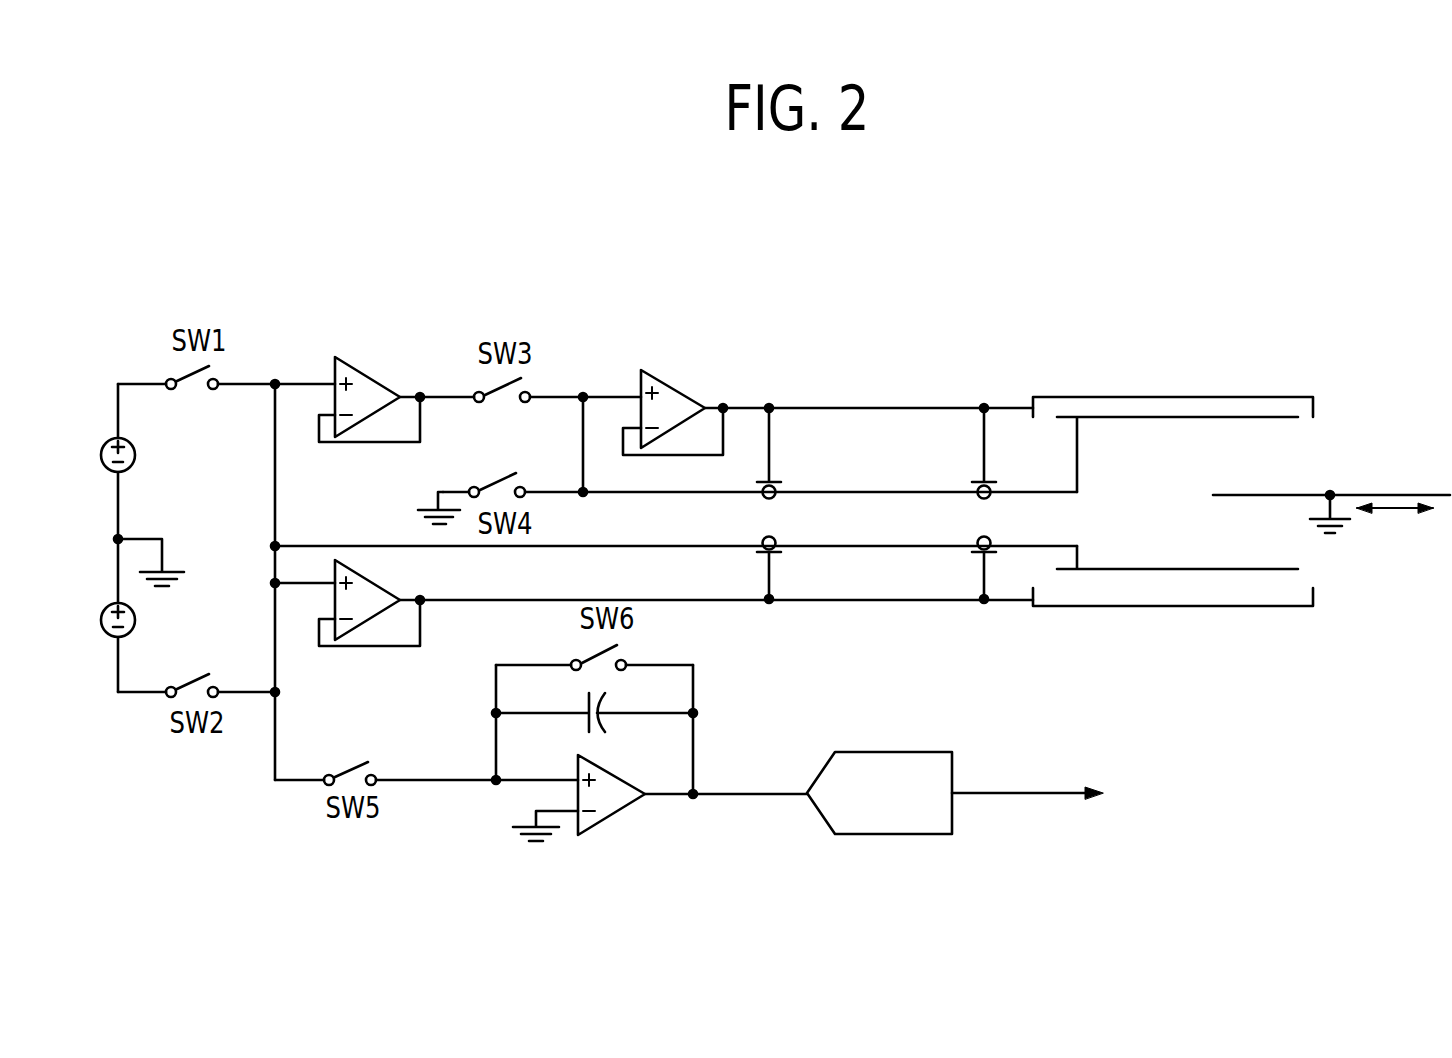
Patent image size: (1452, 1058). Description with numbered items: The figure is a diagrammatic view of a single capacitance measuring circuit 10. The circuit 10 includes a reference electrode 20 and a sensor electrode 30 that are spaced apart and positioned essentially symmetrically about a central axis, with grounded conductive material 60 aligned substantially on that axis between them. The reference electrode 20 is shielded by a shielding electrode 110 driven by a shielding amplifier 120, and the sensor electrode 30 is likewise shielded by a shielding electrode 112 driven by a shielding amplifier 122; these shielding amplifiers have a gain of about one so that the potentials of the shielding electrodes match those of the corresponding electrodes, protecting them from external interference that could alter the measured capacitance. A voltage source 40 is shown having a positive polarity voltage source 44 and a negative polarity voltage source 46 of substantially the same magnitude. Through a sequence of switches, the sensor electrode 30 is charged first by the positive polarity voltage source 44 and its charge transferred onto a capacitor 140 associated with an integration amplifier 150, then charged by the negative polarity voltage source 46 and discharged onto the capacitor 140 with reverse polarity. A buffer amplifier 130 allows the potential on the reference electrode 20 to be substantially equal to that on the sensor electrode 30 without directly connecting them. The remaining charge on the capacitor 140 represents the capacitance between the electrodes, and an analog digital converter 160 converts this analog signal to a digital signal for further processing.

The capacitance measuring circuit 10 is at (800, 383).
The reference electrode 20 is at (1198, 418).
The sensor electrode 30 is at (1165, 569).
The voltage source 40 is at (119, 525).
The positive polarity voltage source 44 is at (137, 445).
The negative polarity voltage source 46 is at (137, 626).
The conductive material 60 is at (1375, 493).
The shielding electrode 110 is at (1208, 397).
The shielding electrode 112 is at (1205, 606).
The shielding amplifier 120 is at (680, 385).
The shielding amplifier 122 is at (377, 585).
The buffer amplifier 130 is at (372, 385).
The capacitor 140 is at (602, 704).
The integration amplifier 150 is at (618, 815).
The analog digital converter 160 is at (893, 752).